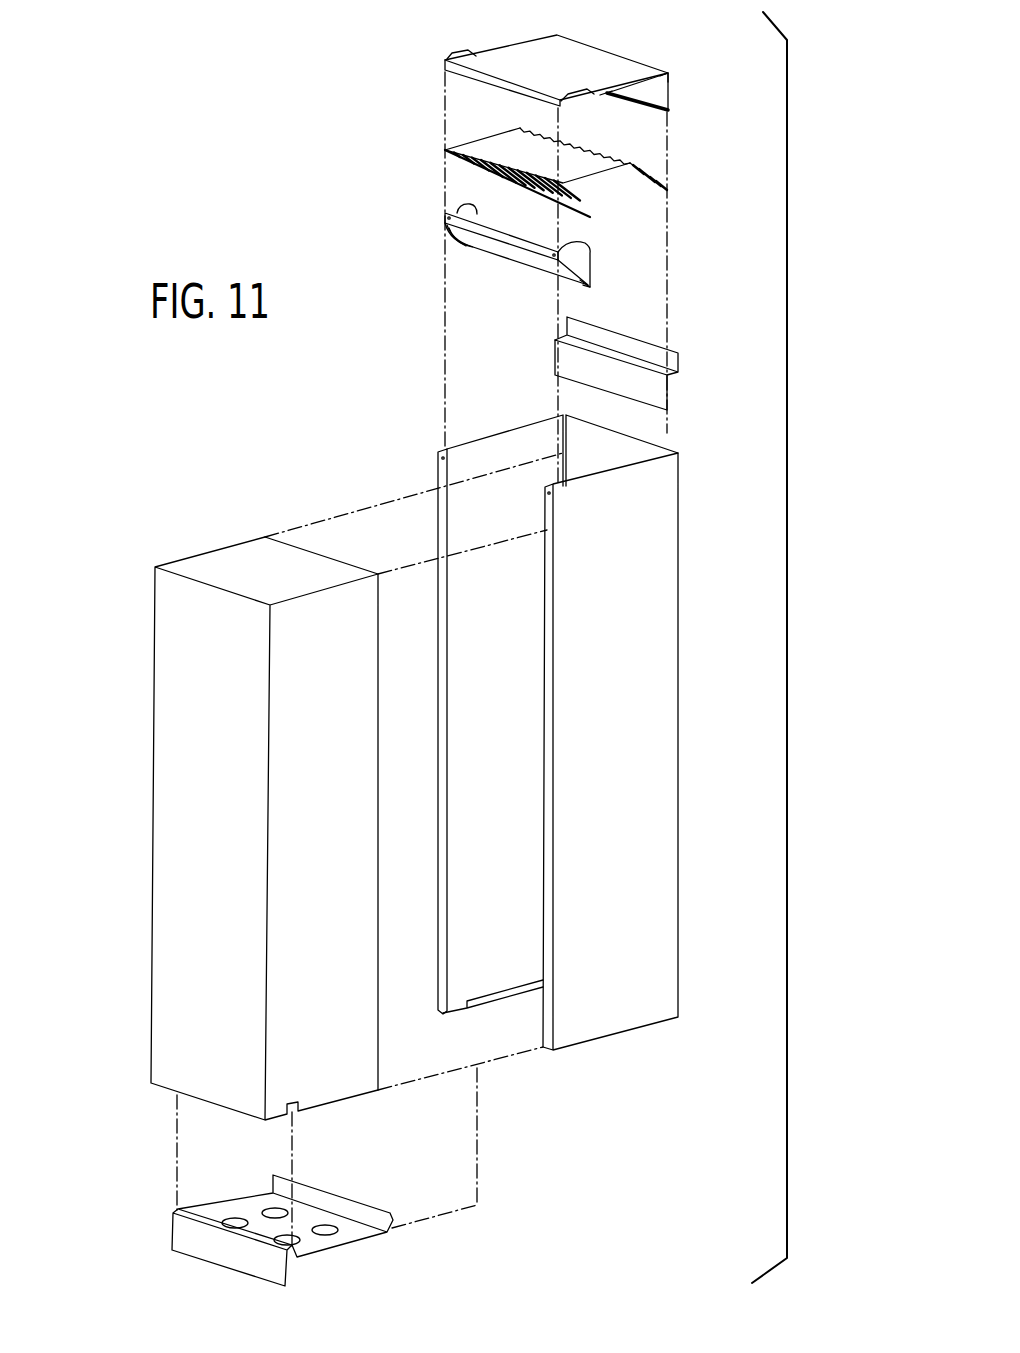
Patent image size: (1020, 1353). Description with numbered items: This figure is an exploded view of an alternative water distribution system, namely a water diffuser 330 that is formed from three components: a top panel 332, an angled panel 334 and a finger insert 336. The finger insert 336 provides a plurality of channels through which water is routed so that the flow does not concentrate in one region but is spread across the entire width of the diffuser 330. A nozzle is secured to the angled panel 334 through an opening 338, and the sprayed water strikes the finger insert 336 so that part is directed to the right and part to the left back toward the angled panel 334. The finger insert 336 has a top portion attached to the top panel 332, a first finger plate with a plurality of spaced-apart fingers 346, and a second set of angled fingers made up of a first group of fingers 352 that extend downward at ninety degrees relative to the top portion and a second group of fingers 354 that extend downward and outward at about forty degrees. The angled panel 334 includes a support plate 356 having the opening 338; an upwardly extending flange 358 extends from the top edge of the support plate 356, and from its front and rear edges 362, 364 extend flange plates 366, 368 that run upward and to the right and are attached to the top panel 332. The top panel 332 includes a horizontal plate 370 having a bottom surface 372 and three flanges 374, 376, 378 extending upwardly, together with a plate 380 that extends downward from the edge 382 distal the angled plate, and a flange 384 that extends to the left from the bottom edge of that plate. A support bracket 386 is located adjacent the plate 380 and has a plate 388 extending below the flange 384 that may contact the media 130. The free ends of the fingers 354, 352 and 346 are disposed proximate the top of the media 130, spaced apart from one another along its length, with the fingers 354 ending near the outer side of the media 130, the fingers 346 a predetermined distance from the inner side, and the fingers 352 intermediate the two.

The media 130 is at (165, 835).
The water diffuser 330 is at (708, 71).
The top panel 332 is at (619, 33).
The angled panel 334 is at (469, 259).
The finger insert 336 is at (428, 146).
The opening 338 is at (513, 258).
The fingers 346 is at (577, 208).
The first group of fingers 352 is at (625, 177).
The second group of fingers 354 is at (663, 187).
The support plate 356 is at (458, 233).
The upwardly extending flange 358 is at (500, 233).
The front edge 362 is at (580, 283).
The rear edge 364 is at (462, 248).
The flange plate 366 is at (587, 263).
The flange plate 368 is at (460, 208).
The horizontal plate 370 is at (520, 52).
The bottom surface 372 is at (607, 95).
The flange 374 is at (577, 100).
The flange 376 is at (498, 82).
The flange 378 is at (467, 56).
The plate 380 is at (660, 90).
The edge 382 is at (666, 71).
The flange 384 is at (658, 112).
The support bracket 386 is at (694, 384).
The plate 388 is at (657, 393).